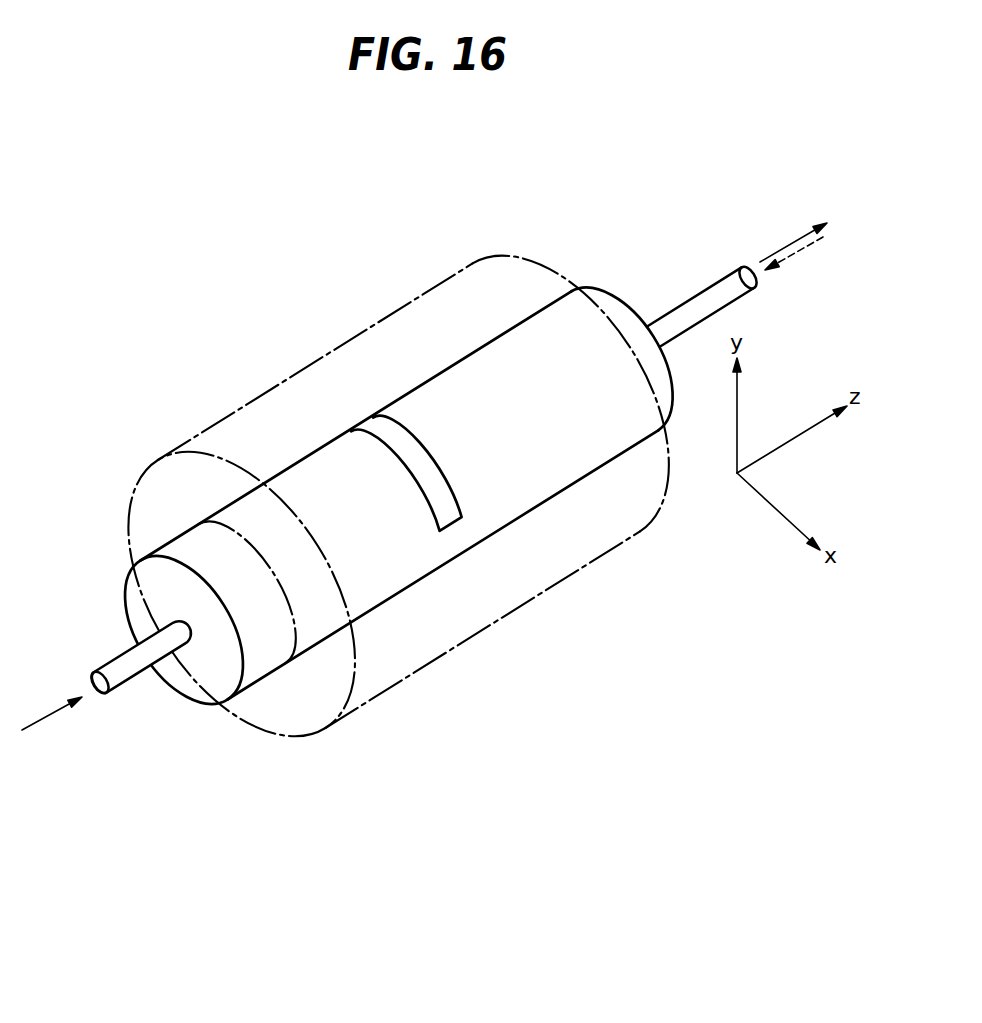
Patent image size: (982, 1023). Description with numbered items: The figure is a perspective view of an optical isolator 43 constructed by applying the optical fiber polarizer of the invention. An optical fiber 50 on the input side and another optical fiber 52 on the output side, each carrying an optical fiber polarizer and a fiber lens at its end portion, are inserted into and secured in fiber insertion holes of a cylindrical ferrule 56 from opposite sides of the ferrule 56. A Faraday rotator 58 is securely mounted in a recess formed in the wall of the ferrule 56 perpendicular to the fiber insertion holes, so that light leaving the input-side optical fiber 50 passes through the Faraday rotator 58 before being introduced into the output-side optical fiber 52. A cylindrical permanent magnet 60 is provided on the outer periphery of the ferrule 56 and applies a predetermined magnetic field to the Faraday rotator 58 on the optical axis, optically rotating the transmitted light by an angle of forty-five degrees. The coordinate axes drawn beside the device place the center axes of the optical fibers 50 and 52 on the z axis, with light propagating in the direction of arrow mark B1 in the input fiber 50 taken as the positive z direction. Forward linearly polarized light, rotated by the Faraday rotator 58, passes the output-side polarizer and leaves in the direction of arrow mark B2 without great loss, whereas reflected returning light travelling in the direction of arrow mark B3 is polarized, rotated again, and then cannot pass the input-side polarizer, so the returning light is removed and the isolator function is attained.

The optical assembly 43 is at (327, 318).
The optical fiber on the input side 50 is at (128, 680).
The optical fiber on the output side 52 is at (690, 302).
The cylindrical ferrule 56 is at (400, 592).
The Faraday rotator 58 is at (428, 454).
The cylindrical permanent magnet 60 is at (547, 590).
The arrow mark B1 is at (50, 716).
The arrow mark B2 is at (787, 246).
The arrow mark B3 is at (797, 252).